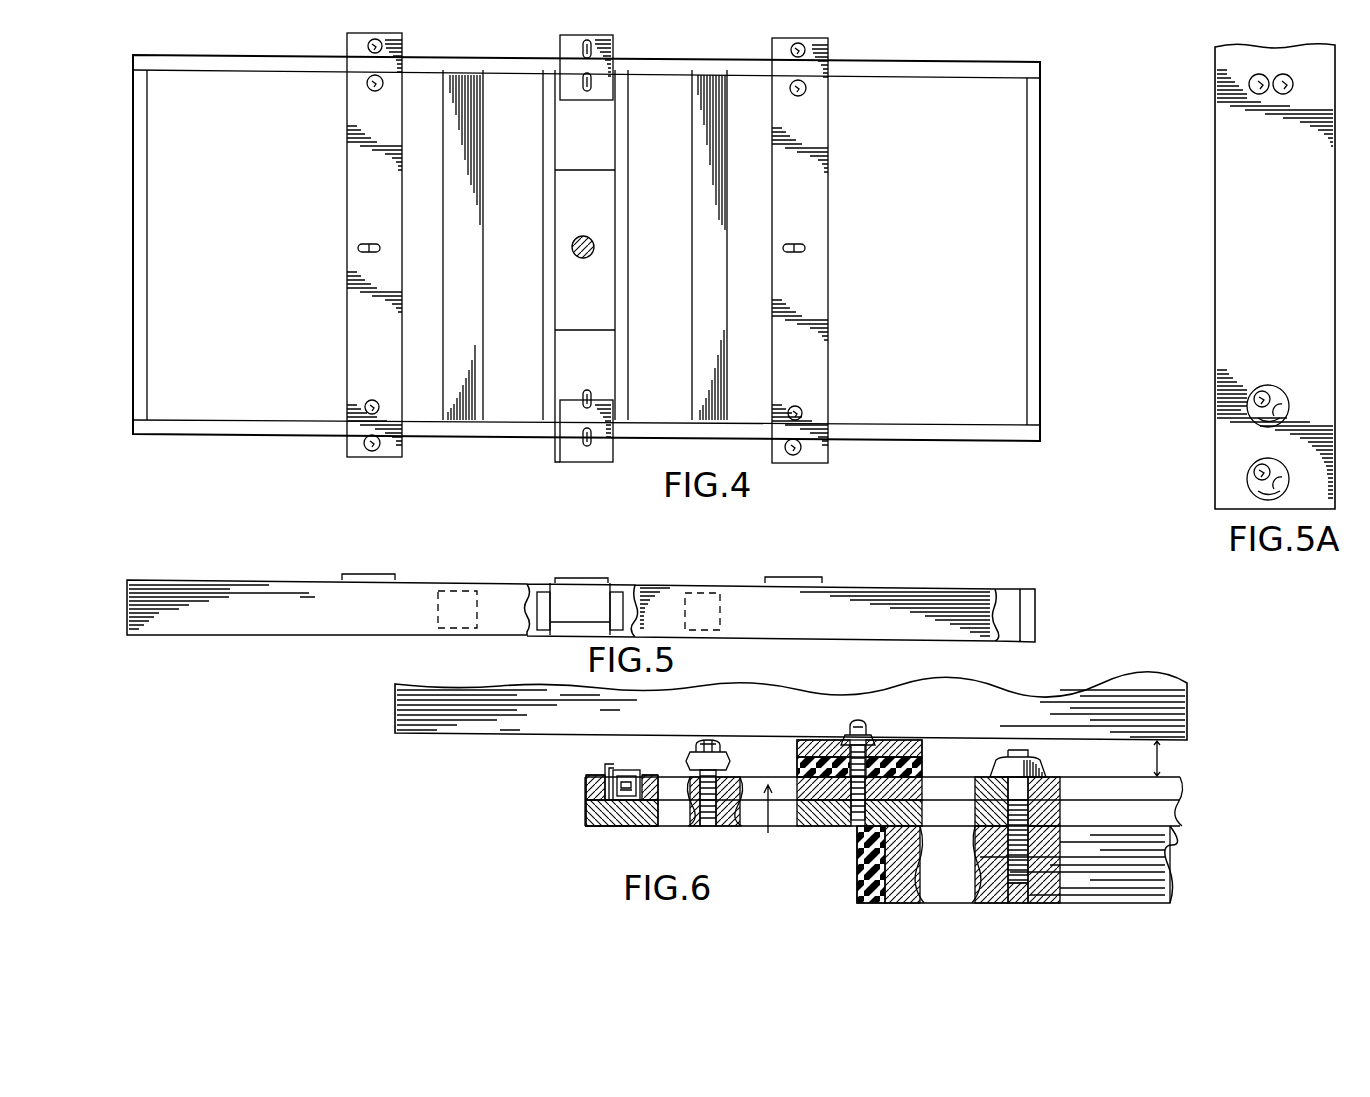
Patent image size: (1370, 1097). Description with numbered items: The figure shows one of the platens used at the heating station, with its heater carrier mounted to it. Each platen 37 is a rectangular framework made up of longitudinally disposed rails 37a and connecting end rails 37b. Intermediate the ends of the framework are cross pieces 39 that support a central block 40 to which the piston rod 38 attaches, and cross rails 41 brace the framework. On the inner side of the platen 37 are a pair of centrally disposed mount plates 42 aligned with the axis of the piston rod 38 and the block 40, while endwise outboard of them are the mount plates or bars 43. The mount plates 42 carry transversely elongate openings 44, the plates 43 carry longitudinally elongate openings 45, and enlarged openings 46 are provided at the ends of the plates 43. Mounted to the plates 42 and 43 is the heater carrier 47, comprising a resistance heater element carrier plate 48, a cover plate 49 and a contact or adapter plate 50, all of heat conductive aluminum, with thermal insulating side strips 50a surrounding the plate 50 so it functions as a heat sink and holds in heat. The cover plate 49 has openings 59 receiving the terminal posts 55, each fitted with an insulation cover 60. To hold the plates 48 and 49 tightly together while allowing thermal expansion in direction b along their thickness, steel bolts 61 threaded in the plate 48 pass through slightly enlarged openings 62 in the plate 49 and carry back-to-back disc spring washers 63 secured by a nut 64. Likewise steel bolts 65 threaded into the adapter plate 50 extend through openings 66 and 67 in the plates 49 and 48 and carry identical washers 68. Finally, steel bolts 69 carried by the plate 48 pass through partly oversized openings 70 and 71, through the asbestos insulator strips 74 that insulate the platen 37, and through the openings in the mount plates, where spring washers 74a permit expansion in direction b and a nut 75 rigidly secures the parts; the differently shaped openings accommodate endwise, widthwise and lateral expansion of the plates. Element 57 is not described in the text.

In FIG. 4, the platen 37 is at (905, 442).
In FIG. 5, the platen 37 is at (757, 629).
In FIG. 6, the platen 37 is at (1040, 716).
In FIG. 4, the longitudinally disposed rails 37a is at (960, 78).
In FIG. 4, the connecting end rails 37b is at (147, 205).
In FIG. 4, the piston rod 38 is at (583, 236).
In FIG. 4, the cross pieces 39 is at (543, 342).
In FIG. 5, the cross pieces 39 is at (543, 592).
In FIG. 4, the central block 40 is at (590, 297).
In FIG. 5, the central block 40 is at (580, 622).
In FIG. 4, the cross rails 41 is at (483, 320).
In FIG. 5, the cross rails 41 is at (705, 593).
In FIG. 4, the mount plates 42 is at (613, 50).
In FIG. 5, the mount plates 42 is at (583, 578).
In FIG. 4, the mount plates or bars 43 is at (385, 216).
In FIG. 5A, the mount plates or bars 43 is at (1263, 320).
In FIG. 5, the mount plates or bars 43 is at (380, 574).
In FIG. 6, the mount plates or bars 43 is at (922, 745).
In FIG. 4, the openings 44 is at (556, 452).
In FIG. 4, the elongate openings 45 is at (362, 248).
In FIG. 5A, the elongate openings 45 is at (1282, 95).
In FIG. 4, the enlarged openings 46 is at (367, 85).
In FIG. 5A, the enlarged openings 46 is at (1278, 398).
In FIG. 6, the enlarged openings 46 is at (830, 745).
In FIG. 6, the heater carrier 47 is at (1248, 824).
In FIG. 6, the resistance heater element carrier plate 48 is at (1172, 826).
In FIG. 6, the cover plate 49 is at (1172, 795).
In FIG. 6, the contact plate or adapter plate 50 is at (1175, 897).
In FIG. 6, the thermal insulating side strips 50a is at (860, 880).
In FIG. 6, the terminal posts 55 is at (618, 805).
In FIG. 6, the retaining clip 57 is at (605, 780).
In FIG. 6, the openings 59 is at (645, 790).
In FIG. 6, the insulation covers 60 is at (628, 770).
In FIG. 6, the steel bolts 61 is at (700, 822).
In FIG. 6, the slightly enlarged openings 62 is at (745, 790).
In FIG. 6, the disc spring washers 63 is at (728, 752).
In FIG. 6, the nut 64 is at (698, 745).
In FIG. 6, the steel bolts 65 is at (1022, 858).
In FIG. 6, the openings 66 is at (1054, 820).
In FIG. 6, the openings 67 is at (1060, 797).
In FIG. 6, the washers 68 is at (1035, 770).
In FIG. 4, the steel bolts or stud members 69 is at (793, 44).
In FIG. 5A, the steel bolts or stud members 69 is at (1270, 74).
In FIG. 6, the steel bolts or stud members 69 is at (868, 790).
In FIG. 6, the partly over-sized openings 70 is at (845, 815).
In FIG. 6, the partly over-sized openings 71 is at (840, 800).
In FIG. 6, the insulator strips 74 is at (905, 770).
In FIG. 6, the spring washers 74a is at (870, 738).
In FIG. 6, the nut 75 is at (853, 722).
In FIG. 6, the direction b is at (765, 825).